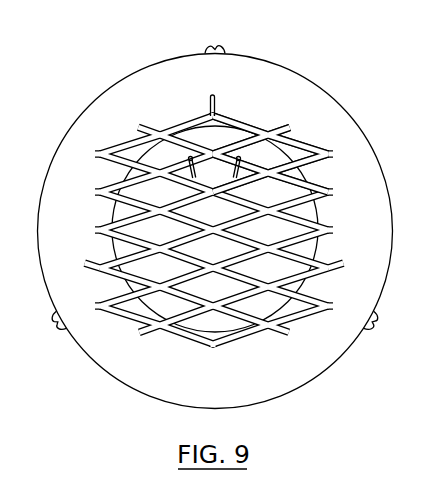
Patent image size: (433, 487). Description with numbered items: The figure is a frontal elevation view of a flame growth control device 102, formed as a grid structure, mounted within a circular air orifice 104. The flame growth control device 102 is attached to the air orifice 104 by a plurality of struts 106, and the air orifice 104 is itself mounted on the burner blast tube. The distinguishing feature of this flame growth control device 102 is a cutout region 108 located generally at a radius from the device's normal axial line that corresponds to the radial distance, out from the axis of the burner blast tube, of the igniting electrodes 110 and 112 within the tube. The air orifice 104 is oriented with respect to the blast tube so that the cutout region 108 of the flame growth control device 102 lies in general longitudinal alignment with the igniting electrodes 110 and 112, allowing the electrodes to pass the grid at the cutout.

The flame growth control device 102 is at (107, 186).
The air orifice 104 is at (315, 84).
The struts 106 is at (215, 97).
The cutout region 108 is at (225, 168).
The igniting electrode 110 is at (149, 151).
The igniting electrode 112 is at (271, 151).